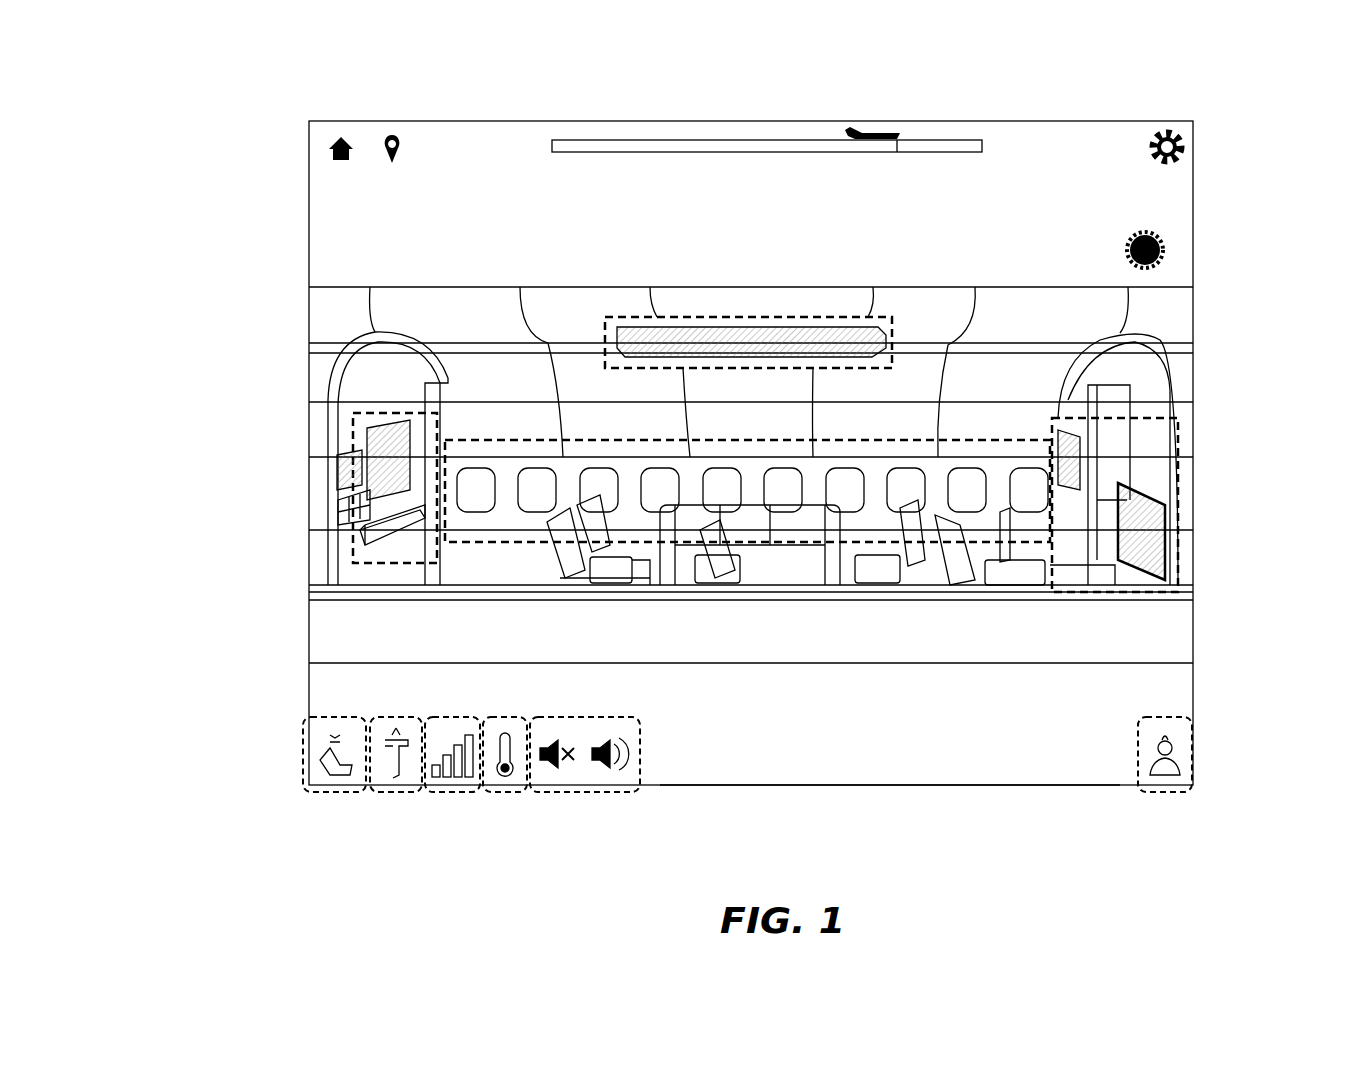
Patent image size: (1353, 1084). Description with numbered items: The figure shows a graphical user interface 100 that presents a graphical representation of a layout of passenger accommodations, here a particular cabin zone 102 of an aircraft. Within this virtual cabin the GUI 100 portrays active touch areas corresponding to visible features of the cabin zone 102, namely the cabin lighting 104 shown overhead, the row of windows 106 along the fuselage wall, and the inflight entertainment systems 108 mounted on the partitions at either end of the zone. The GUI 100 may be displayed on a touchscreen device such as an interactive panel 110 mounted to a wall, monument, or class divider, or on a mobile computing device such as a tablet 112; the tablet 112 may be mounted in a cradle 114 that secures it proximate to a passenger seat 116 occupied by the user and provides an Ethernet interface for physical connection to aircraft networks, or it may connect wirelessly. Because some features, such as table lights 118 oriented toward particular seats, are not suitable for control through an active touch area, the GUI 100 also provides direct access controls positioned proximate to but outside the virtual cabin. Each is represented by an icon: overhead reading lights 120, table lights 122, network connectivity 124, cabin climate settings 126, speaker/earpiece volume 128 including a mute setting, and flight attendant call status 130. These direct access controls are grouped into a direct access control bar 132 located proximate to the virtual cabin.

The graphical user interface 100 is at (157, 128).
The cabin zone 102 is at (1222, 335).
The cabin lighting 104 is at (655, 317).
The windows 106 is at (590, 440).
The inflight entertainment systems 108 is at (353, 438).
The interactive panel 110 is at (338, 513).
The tablet 112 is at (605, 571).
The cradle 114 is at (700, 578).
The passenger seat 116 is at (700, 567).
The table lights 118 is at (1030, 562).
The overhead reading lights 120 is at (305, 752).
The table lights 122 is at (397, 795).
The network connectivity 124 is at (452, 795).
The cabin climate settings 126 is at (503, 795).
The speaker/earpiece volume 128 is at (583, 795).
The flight attendant call status 130 is at (1192, 755).
The direct access control bar 132 is at (820, 768).